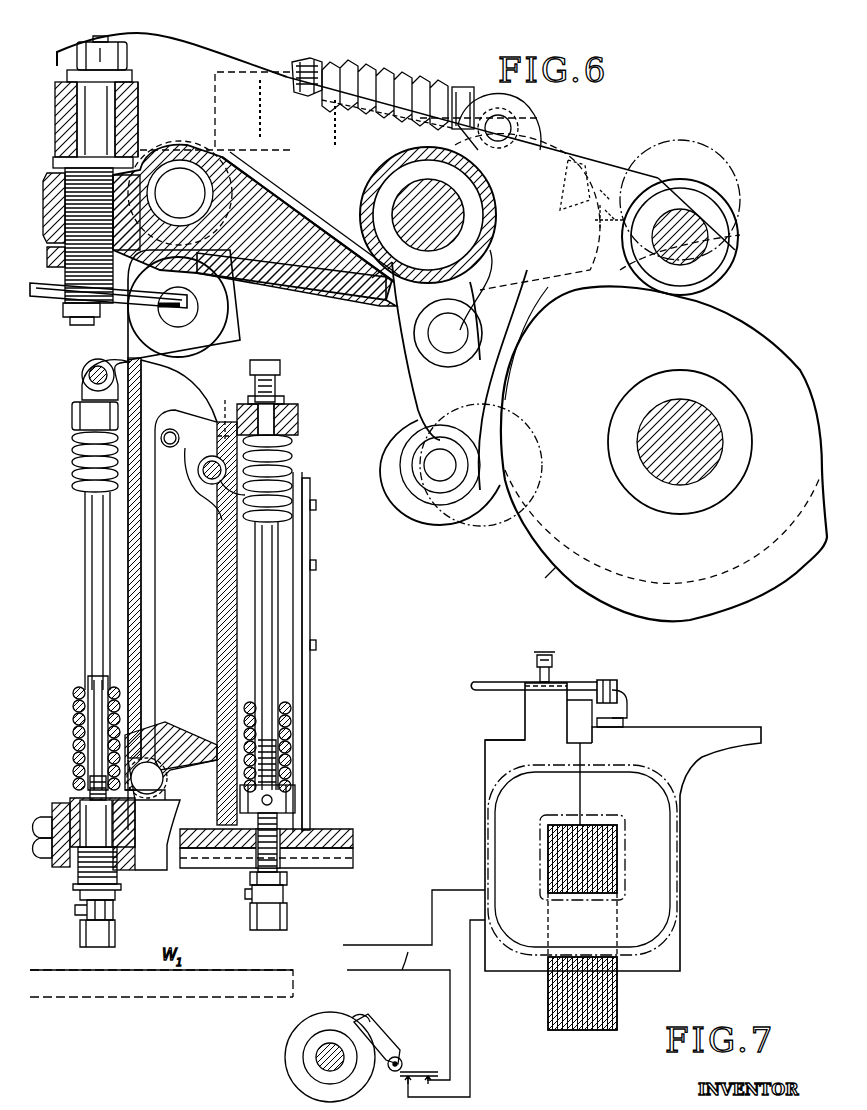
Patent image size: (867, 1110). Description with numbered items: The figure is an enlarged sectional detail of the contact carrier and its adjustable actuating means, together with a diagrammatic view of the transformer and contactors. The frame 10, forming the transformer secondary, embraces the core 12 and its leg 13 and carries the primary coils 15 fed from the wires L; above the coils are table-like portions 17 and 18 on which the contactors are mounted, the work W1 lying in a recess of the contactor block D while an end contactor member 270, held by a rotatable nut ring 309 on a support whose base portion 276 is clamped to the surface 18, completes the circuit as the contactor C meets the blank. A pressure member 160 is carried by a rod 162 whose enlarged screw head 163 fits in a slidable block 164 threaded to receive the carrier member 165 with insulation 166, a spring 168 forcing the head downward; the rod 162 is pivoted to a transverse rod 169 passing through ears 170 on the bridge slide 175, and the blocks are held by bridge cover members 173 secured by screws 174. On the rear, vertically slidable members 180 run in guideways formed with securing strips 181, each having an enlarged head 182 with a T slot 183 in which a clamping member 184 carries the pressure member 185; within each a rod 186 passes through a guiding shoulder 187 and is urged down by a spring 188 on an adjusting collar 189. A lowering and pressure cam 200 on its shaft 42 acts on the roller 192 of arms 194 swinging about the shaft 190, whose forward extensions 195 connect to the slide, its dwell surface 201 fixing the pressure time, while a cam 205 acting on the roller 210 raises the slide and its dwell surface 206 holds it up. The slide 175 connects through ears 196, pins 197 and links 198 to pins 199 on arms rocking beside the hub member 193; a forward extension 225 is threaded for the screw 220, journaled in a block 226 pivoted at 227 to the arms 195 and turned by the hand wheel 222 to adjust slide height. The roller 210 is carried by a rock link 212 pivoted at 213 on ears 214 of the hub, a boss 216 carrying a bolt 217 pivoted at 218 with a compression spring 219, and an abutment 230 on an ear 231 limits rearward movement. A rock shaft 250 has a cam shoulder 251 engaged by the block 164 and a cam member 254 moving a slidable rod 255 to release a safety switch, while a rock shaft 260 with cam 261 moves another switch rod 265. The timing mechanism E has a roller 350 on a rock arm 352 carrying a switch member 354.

In FIG. 7, the frame 10 is at (490, 774).
In FIG. 7, the core 12 is at (610, 1000).
In FIG. 7, the leg of the core 13 is at (608, 860).
In FIG. 7, the primary coils 15 is at (492, 853).
In FIG. 7, the table-like portion 17 is at (507, 744).
In FIG. 7, the table-like portion 18 is at (688, 735).
In FIG. 6, the cam shaft 42 is at (656, 410).
In FIG. 6, the pressure member 160 is at (84, 940).
In FIG. 7, the pressure member 160 is at (553, 662).
In FIG. 6, the rod 162 is at (86, 628).
In FIG. 6, the enlarged screw head 163 is at (70, 800).
In FIG. 6, the slidable block 164 is at (135, 878).
In FIG. 6, the carrier member 165 is at (74, 888).
In FIG. 6, the insulation 166 is at (82, 916).
In FIG. 6, the spring 168 is at (72, 714).
In FIG. 6, the transverse rod 169 is at (82, 376).
In FIG. 6, the ears 170 is at (95, 355).
In FIG. 6, the bridge cover members 173 is at (52, 870).
In FIG. 6, the screws 174 is at (44, 826).
In FIG. 6, the bridge slide 175 is at (128, 572).
In FIG. 6, the vertically slidable members 180 is at (284, 600).
In FIG. 6, the securing strips 181 is at (308, 648).
In FIG. 6, the enlarged head 182 is at (332, 829).
In FIG. 6, the T slot 183 is at (336, 870).
In FIG. 6, the clamping member 184 is at (287, 880).
In FIG. 6, the pressure member 185 is at (287, 920).
In FIG. 6, the rod 186 is at (280, 560).
In FIG. 6, the guiding shoulder 187 is at (298, 415).
In FIG. 6, the spring 188 is at (290, 716).
In FIG. 6, the adjusting collar 189 is at (295, 798).
In FIG. 6, the shaft 190 is at (392, 206).
In FIG. 6, the roller 192 is at (722, 144).
In FIG. 6, the hub member 193 is at (362, 182).
In FIG. 6, the arms 194 is at (578, 162).
In FIG. 6, the forward extensions 195 is at (196, 95).
In FIG. 6, the ears 196 is at (232, 355).
In FIG. 6, the pins 197 is at (178, 328).
In FIG. 6, the links 198 is at (232, 285).
In FIG. 6, the pins 199 is at (252, 220).
In FIG. 6, the lowering and pressure cam 200 is at (664, 453).
In FIG. 6, the dwell surface 201 is at (532, 580).
In FIG. 6, the cam 205 is at (685, 585).
In FIG. 6, the dwell surface 206 is at (560, 290).
In FIG. 6, the roller 210 is at (405, 520).
In FIG. 6, the rock link 212 is at (408, 368).
In FIG. 6, the pivot 213 is at (430, 332).
In FIG. 6, the ears 214 is at (530, 255).
In FIG. 6, the boss 216 is at (463, 86).
In FIG. 6, the bolt 217 is at (304, 62).
In FIG. 6, the pivot 218 is at (505, 126).
In FIG. 6, the compression spring 219 is at (386, 70).
In FIG. 6, the screw 220 is at (112, 300).
In FIG. 6, the hand wheel 222 is at (42, 305).
In FIG. 6, the forward extension 225 is at (142, 160).
In FIG. 6, the block 226 is at (138, 114).
In FIG. 6, the pivot connection 227 is at (132, 94).
In FIG. 6, the adjustable abutment 230 is at (585, 217).
In FIG. 6, the ear 231 is at (568, 183).
In FIG. 6, the rock shaft 250 is at (165, 770).
In FIG. 6, the cam shoulder 251 is at (172, 808).
In FIG. 6, the cam member 254 is at (170, 748).
In FIG. 6, the slidable rod 255 is at (145, 664).
In FIG. 6, the rock shaft 260 is at (205, 498).
In FIG. 6, the cam 261 is at (200, 480).
In FIG. 6, the switch controlling rod 265 is at (220, 397).
In FIG. 7, the end contactor member 270 is at (580, 713).
In FIG. 7, the base portion 276 is at (623, 720).
In FIG. 7, the rotatable nut ring 309 is at (612, 678).
In FIG. 7, the roller 350 is at (378, 1016).
In FIG. 7, the actuating rock arm 352 is at (380, 1040).
In FIG. 7, the switch member 354 is at (430, 1068).
In FIG. 7, the contactor C is at (632, 696).
In FIG. 7, the contactor block D is at (538, 718).
In FIG. 7, the timing mechanism E is at (300, 1072).
In FIG. 7, the wires L is at (414, 993).
In FIG. 7, the work W1 is at (534, 676).